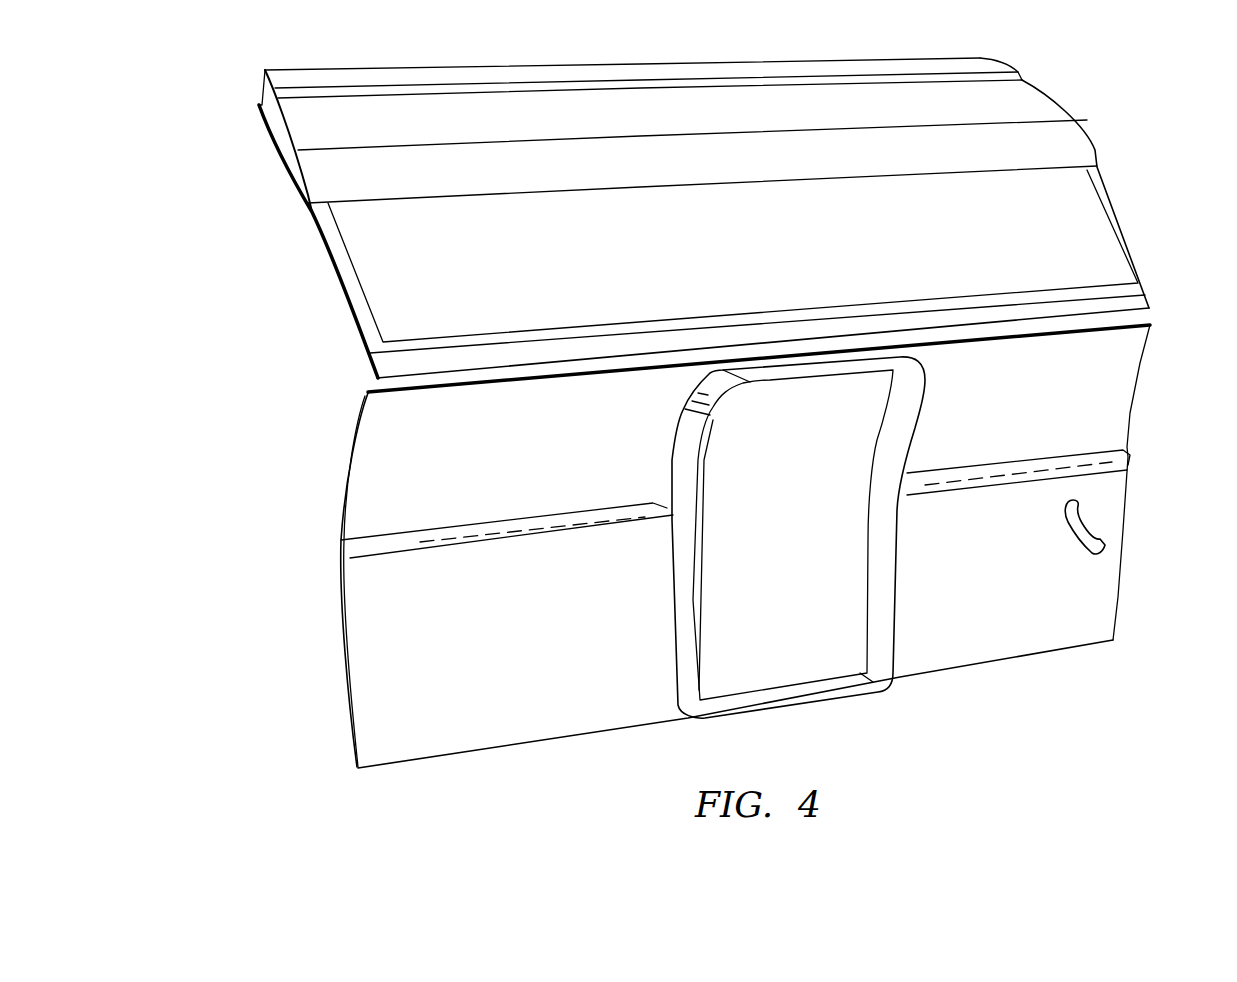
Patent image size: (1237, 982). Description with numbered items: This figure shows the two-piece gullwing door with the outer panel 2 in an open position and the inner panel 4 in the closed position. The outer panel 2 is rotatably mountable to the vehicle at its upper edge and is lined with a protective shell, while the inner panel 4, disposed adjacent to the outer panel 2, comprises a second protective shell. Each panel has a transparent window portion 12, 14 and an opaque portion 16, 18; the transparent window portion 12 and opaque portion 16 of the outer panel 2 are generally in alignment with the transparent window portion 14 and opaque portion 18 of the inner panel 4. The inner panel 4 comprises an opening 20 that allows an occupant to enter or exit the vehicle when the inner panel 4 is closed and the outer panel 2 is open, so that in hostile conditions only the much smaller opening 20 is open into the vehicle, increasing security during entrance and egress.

The outer panel 2 is at (1067, 102).
The inner panel 4 is at (1129, 570).
The transparent window portion 12 is at (1090, 223).
The transparent window portion 14 is at (1108, 377).
The opaque portion 16 is at (307, 127).
The opaque portion 18 is at (371, 692).
The opening 20 is at (797, 650).